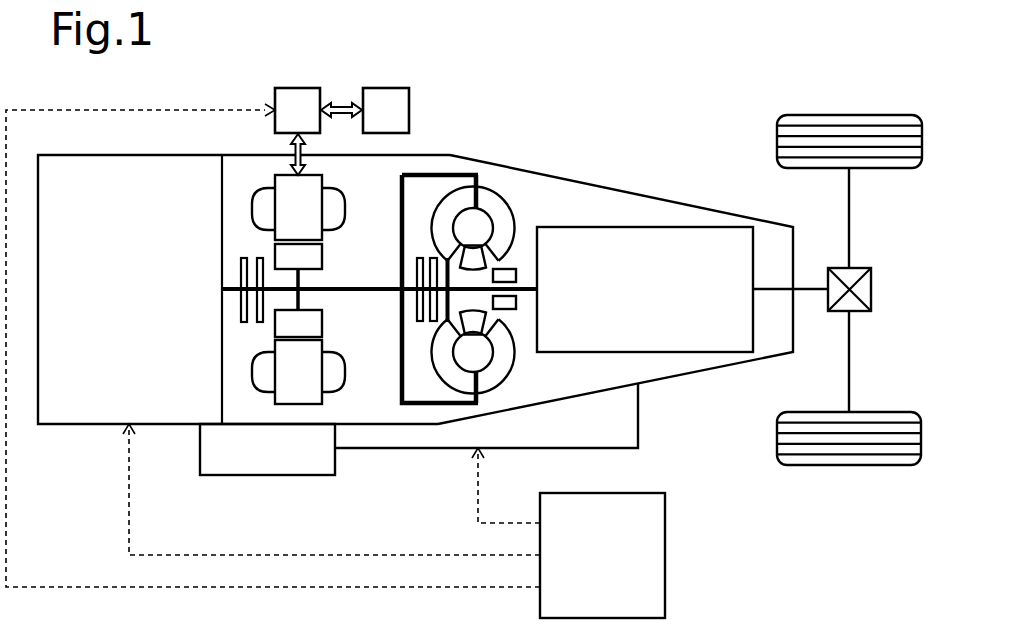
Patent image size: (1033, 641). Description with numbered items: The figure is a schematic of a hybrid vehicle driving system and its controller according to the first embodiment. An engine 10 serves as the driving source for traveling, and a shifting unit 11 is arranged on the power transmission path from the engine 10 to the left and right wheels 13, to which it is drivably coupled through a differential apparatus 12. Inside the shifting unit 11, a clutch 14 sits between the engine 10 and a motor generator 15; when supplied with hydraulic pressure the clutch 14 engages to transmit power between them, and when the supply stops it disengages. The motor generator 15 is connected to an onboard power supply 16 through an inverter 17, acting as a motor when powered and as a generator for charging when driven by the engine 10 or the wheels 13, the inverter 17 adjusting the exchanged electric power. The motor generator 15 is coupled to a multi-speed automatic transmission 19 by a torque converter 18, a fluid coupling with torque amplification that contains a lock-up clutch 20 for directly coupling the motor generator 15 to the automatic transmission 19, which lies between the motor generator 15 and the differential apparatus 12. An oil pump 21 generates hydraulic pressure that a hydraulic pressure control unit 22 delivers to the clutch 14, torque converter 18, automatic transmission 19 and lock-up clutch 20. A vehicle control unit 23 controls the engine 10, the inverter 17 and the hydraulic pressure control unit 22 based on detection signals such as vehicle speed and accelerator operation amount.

The engine 10 is at (80, 425).
The shifting unit 11 is at (693, 375).
The differential apparatus 12 is at (858, 268).
The wheels 13 is at (888, 168).
The clutch 14 is at (240, 302).
The motor generator 15 is at (345, 205).
The onboard power supply 16 is at (409, 110).
The inverter 17 is at (275, 125).
The torque converter 18 is at (508, 197).
The multi-speed automatic transmission 19 is at (576, 355).
The lock-up clutch 20 is at (417, 277).
The oil pump 21 is at (267, 477).
The hydraulic pressure control unit 22 is at (400, 448).
The vehicle control unit 23 is at (665, 515).